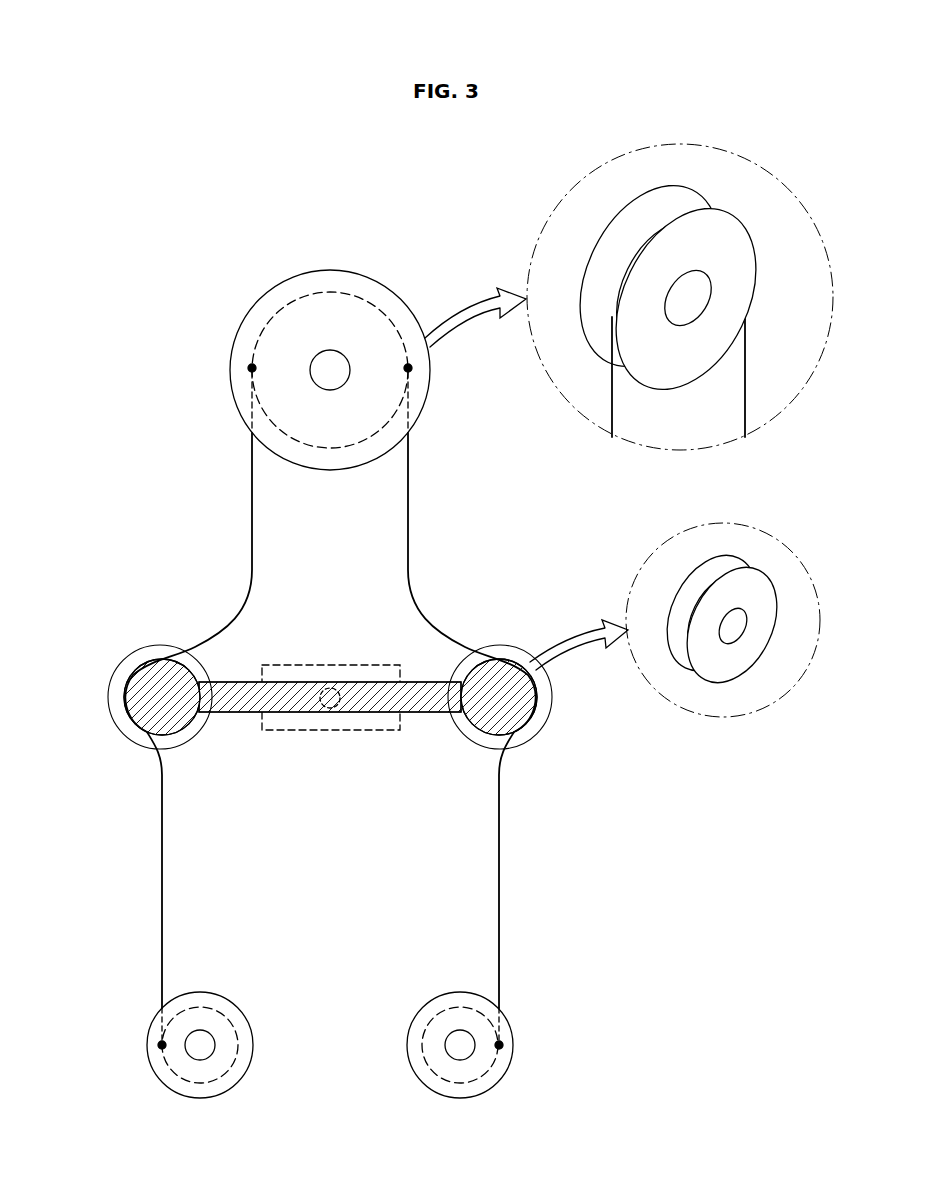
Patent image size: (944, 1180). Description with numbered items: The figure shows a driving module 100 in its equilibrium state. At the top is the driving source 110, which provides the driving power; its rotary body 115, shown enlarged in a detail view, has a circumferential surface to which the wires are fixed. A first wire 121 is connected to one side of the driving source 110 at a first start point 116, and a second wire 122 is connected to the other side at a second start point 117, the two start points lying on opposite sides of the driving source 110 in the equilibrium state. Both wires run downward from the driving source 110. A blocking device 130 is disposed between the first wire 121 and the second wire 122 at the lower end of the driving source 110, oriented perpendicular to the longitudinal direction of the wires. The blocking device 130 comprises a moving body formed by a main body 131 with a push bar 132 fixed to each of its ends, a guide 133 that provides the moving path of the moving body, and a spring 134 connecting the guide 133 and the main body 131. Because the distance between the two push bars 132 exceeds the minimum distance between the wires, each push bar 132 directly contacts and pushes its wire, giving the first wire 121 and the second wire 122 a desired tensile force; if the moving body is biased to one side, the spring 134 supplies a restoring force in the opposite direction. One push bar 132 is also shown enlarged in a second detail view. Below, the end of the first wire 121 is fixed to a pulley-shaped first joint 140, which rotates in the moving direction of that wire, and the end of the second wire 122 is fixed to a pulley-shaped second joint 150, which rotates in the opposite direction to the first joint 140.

The driving module 100 is at (351, 233).
The driving source 110 is at (334, 456).
The rotary body 115 is at (735, 247).
The first start point 116 is at (249, 368).
The second start point 117 is at (412, 369).
The first wire 121 is at (250, 527).
The second wire 122 is at (410, 527).
The blocking device 130 is at (330, 713).
The main body 131 is at (243, 700).
The push bar 132 is at (143, 693).
The guide 133 is at (331, 664).
The spring 134 is at (341, 737).
The first joint 140 is at (212, 995).
The second joint 150 is at (450, 995).